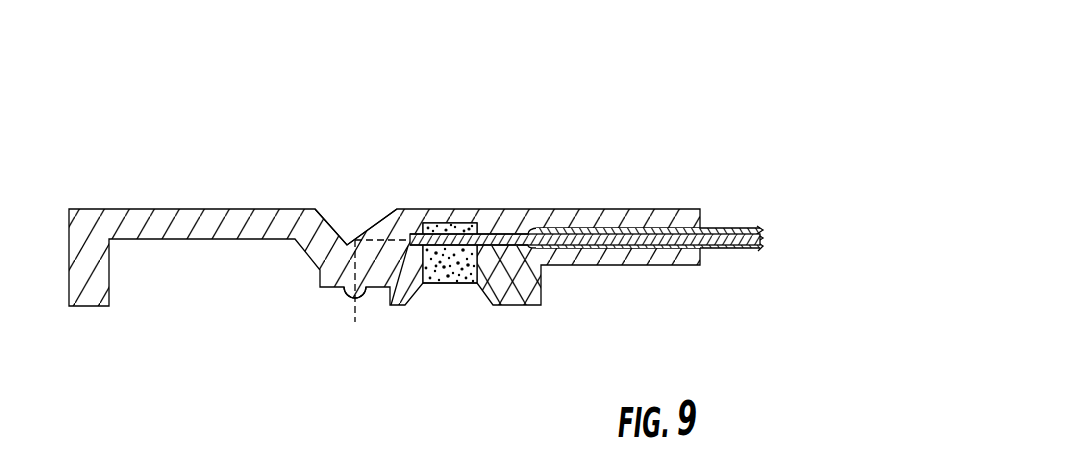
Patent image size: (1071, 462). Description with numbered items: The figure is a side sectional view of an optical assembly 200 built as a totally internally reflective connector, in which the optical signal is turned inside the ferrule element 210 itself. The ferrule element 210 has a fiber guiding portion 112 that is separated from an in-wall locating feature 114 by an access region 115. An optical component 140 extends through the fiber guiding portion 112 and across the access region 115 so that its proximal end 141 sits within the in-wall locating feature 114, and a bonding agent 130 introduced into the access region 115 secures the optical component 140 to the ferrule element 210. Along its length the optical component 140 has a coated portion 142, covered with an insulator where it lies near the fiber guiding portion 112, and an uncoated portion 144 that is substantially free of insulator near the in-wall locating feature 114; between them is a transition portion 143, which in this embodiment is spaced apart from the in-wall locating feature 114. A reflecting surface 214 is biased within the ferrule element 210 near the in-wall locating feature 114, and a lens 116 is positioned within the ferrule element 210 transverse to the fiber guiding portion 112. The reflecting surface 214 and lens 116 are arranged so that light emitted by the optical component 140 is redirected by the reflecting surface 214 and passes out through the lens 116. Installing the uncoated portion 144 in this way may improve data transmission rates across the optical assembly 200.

The optical assembly 200 is at (765, 168).
The ferrule element 210 is at (626, 204).
The reflecting surface 214 is at (363, 232).
The proximal end 141 is at (512, 233).
The coated portion 142 is at (740, 222).
The optical component 140 is at (722, 257).
The fiber guiding portion 112 is at (606, 250).
The transition portion 143 is at (532, 251).
The uncoated portion 144 is at (508, 248).
The access region 115 is at (474, 285).
The bonding agent 130 is at (437, 285).
The in-wall locating feature 114 is at (392, 306).
The lens 116 is at (348, 297).